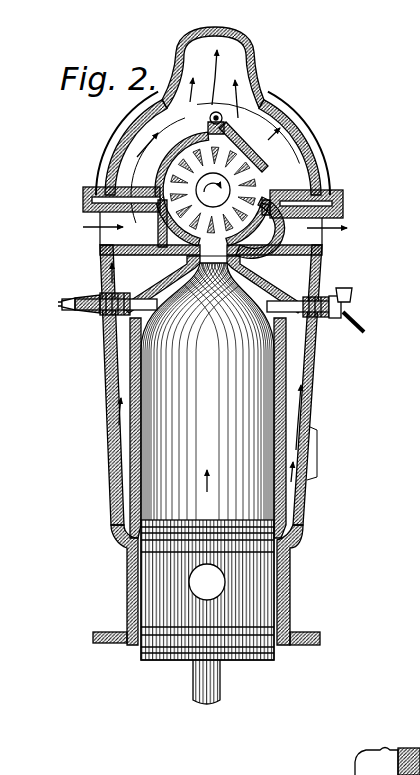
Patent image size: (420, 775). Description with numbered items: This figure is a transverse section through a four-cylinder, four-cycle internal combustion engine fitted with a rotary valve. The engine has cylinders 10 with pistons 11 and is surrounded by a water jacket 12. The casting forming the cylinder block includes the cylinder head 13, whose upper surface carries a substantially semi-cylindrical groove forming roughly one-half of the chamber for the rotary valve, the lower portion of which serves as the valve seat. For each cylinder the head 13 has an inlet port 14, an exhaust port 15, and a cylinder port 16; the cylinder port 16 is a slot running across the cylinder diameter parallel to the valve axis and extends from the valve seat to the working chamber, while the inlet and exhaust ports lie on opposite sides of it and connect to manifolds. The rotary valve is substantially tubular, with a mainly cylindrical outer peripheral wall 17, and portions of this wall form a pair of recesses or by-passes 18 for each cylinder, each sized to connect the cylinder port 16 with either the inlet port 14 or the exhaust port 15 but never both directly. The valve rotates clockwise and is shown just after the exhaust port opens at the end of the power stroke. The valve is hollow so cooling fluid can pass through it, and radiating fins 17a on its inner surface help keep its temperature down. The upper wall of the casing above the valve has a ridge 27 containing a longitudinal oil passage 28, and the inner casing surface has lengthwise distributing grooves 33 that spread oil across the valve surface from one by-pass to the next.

The cylinder 10 is at (207, 483).
The piston 11 is at (253, 572).
The water jacket 12 is at (298, 347).
The cylinder head 13 is at (262, 284).
The inlet port 14 is at (122, 233).
The exhaust port 15 is at (308, 238).
The cylinder port 16 is at (205, 268).
The outer peripheral wall 17 is at (258, 165).
The radiating fins 17a is at (250, 222).
The recess or by-pass 18 is at (160, 165).
The ridge 27 is at (205, 107).
The oil passage 28 is at (232, 113).
The distributing groove 33 is at (224, 124).